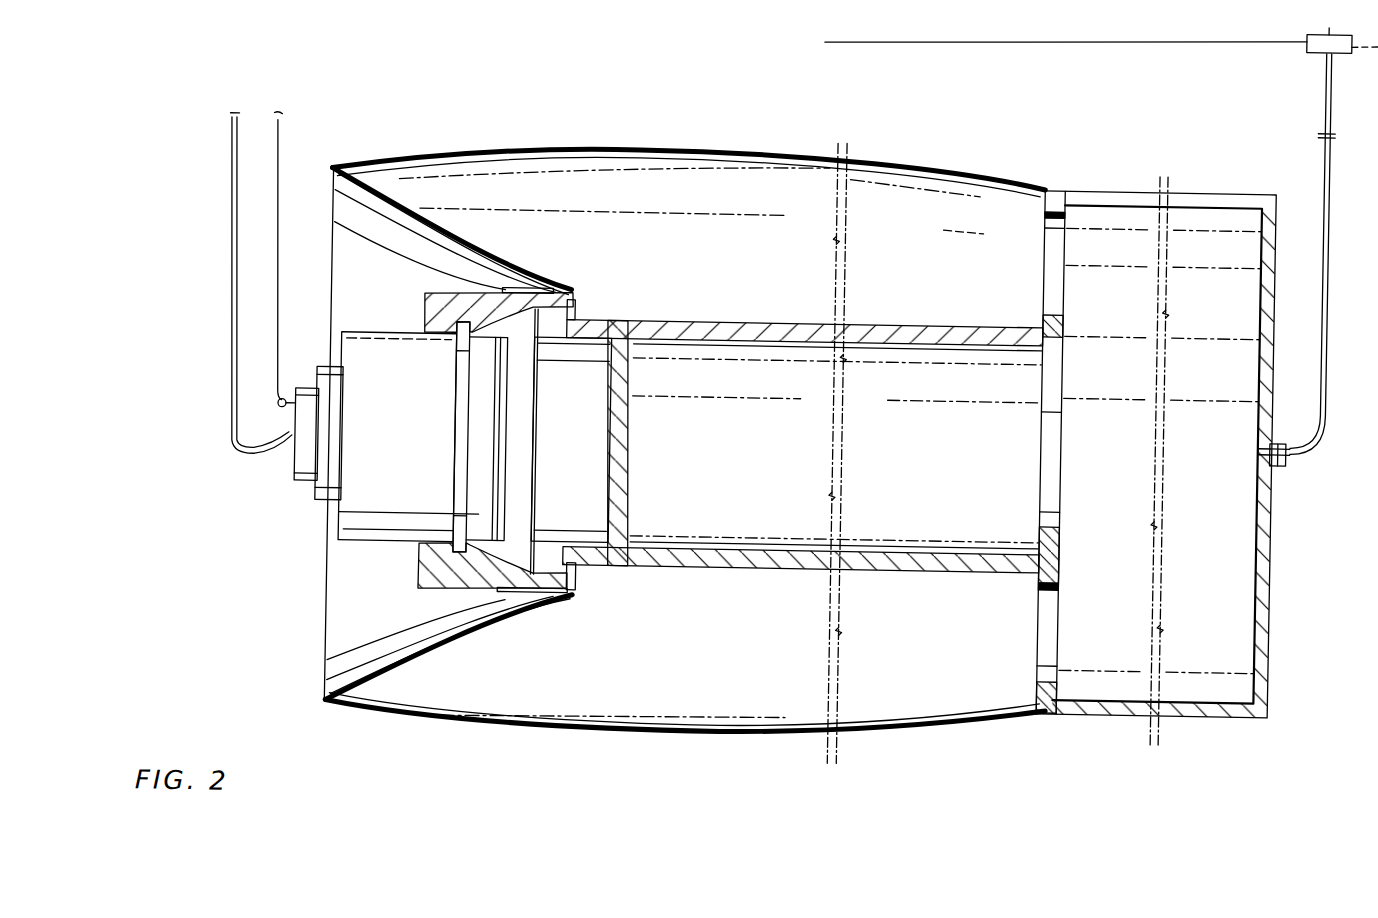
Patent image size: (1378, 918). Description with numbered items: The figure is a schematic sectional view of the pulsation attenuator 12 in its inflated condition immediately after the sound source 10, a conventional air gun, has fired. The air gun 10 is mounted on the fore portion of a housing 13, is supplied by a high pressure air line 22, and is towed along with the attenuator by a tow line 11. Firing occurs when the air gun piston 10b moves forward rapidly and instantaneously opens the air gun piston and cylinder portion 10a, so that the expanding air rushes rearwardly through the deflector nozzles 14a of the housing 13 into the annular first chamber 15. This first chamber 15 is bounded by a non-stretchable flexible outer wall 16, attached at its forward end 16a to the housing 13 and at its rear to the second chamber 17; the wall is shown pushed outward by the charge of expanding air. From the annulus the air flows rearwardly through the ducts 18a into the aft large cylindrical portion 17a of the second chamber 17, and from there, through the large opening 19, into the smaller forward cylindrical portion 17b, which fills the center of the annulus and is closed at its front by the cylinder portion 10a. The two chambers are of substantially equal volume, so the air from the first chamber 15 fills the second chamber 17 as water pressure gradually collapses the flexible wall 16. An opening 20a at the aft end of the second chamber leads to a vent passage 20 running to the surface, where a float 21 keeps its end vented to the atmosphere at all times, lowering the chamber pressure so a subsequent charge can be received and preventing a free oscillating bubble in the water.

The sound source 10 is at (381, 427).
The air gun piston and cylinder portion 10a is at (556, 427).
The air gun piston 10b is at (498, 469).
The tow line 11 is at (275, 154).
The pulsation attenuator 12 is at (496, 128).
The housing 13 is at (425, 312).
The deflector nozzles 14a is at (573, 314).
The first chamber 15 is at (687, 282).
The flexible outer wall 16 is at (689, 417).
The forward end of flexible outer wall 16a is at (525, 290).
The second chamber 17 is at (1208, 171).
The aft large cylindrical portion 17a is at (1093, 488).
The forward cylindrical portion 17b is at (917, 428).
The ducts 18a is at (1045, 271).
The opening 19 is at (1060, 437).
The vent passage 20 is at (1096, 245).
The vent opening 20a is at (1253, 445).
The float 21 is at (1300, 25).
The high pressure air line 22 is at (229, 229).